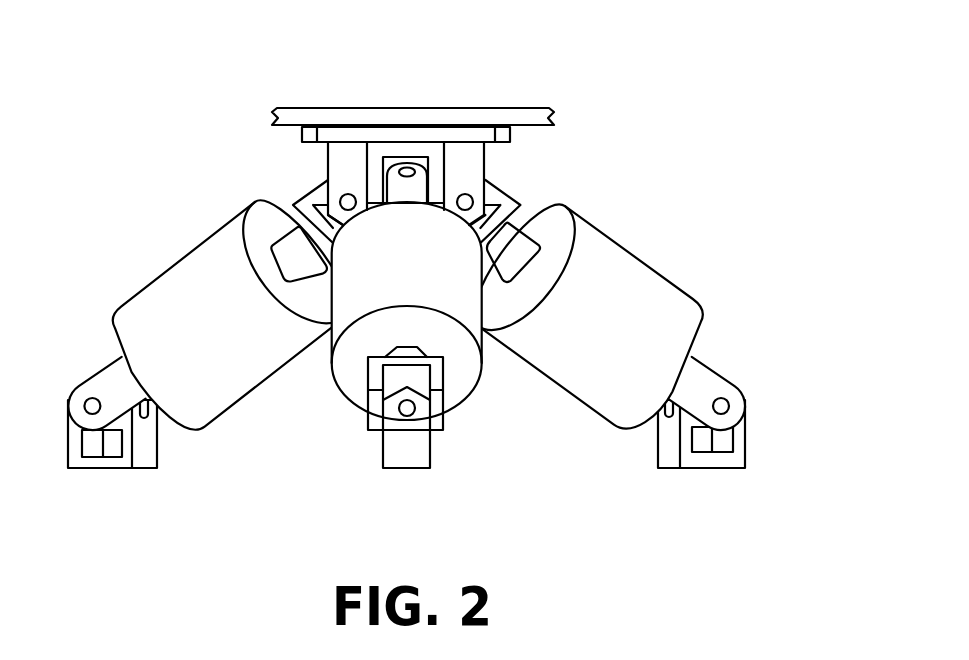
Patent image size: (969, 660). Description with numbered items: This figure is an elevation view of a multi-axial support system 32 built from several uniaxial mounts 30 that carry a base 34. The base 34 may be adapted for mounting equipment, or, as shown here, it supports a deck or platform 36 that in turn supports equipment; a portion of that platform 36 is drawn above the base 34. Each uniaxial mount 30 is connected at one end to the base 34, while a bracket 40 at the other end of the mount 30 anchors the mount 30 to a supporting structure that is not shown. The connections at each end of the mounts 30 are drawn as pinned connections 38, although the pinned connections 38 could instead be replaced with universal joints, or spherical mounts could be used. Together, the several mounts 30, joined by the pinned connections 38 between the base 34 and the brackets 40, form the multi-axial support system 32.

The uniaxial mount 30 is at (202, 303).
The multi-axial support system 32 is at (242, 164).
The base 34 is at (398, 135).
The deck or platform 36 is at (497, 115).
The pinned connections 38 is at (528, 196).
The bracket 40 is at (740, 430).